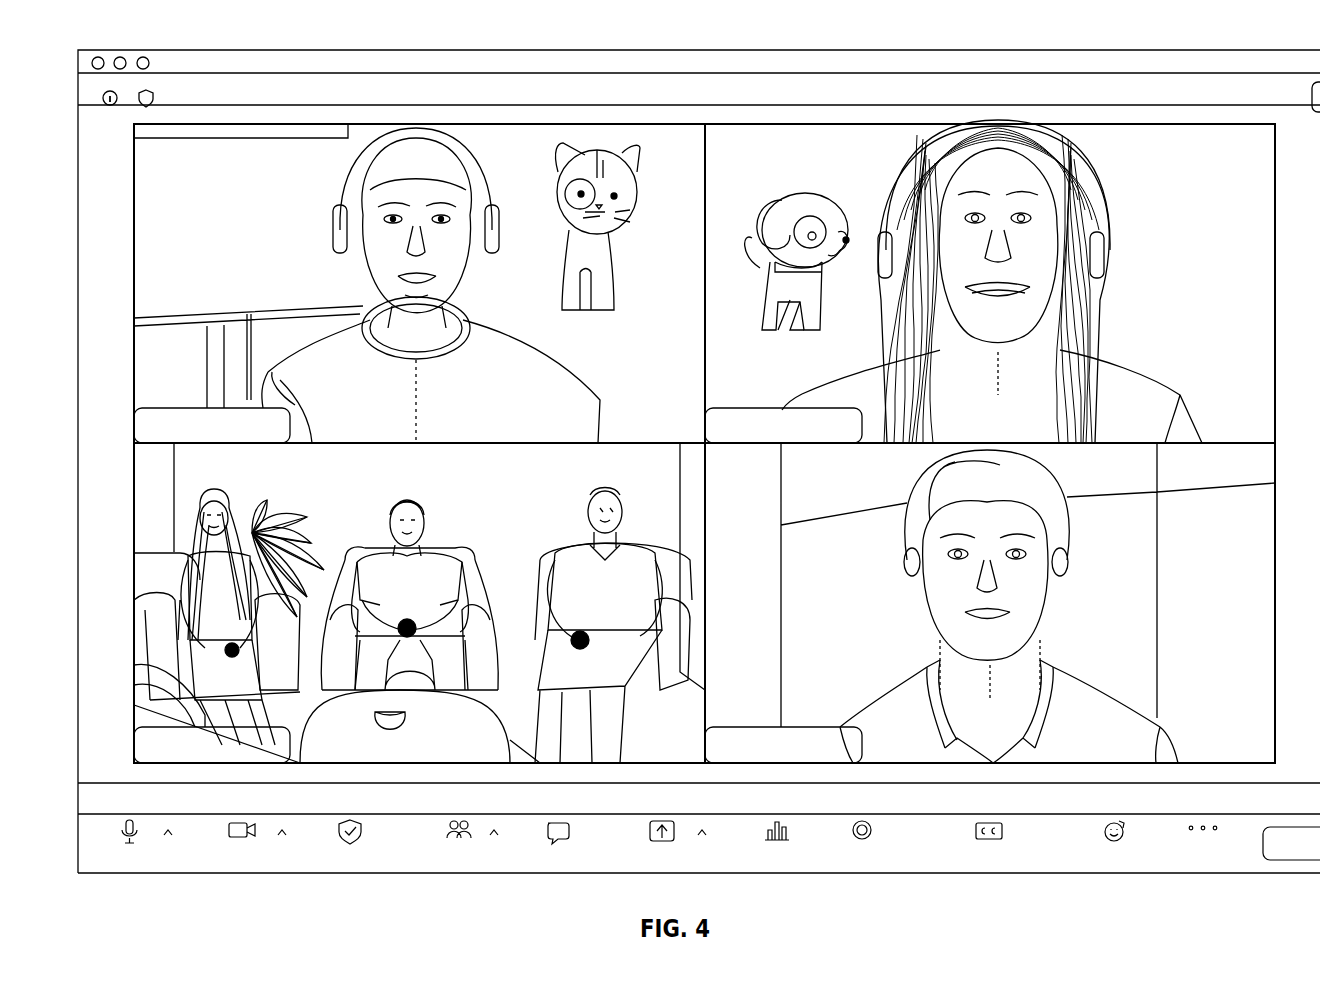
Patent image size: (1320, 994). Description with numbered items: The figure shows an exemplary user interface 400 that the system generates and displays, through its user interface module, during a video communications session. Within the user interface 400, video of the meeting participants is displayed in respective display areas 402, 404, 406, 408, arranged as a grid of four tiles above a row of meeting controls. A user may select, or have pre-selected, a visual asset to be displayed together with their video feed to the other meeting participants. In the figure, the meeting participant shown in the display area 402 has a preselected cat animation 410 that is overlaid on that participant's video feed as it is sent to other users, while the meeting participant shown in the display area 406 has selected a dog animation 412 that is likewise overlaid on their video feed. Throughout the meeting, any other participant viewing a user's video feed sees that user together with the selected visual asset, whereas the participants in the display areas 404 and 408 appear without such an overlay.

The user interface 400 is at (106, 44).
The display area 402 is at (233, 172).
The display area 404 is at (233, 478).
The display area 406 is at (767, 166).
The display area 408 is at (767, 484).
The cat animation 410 is at (570, 312).
The dog animation 412 is at (752, 332).